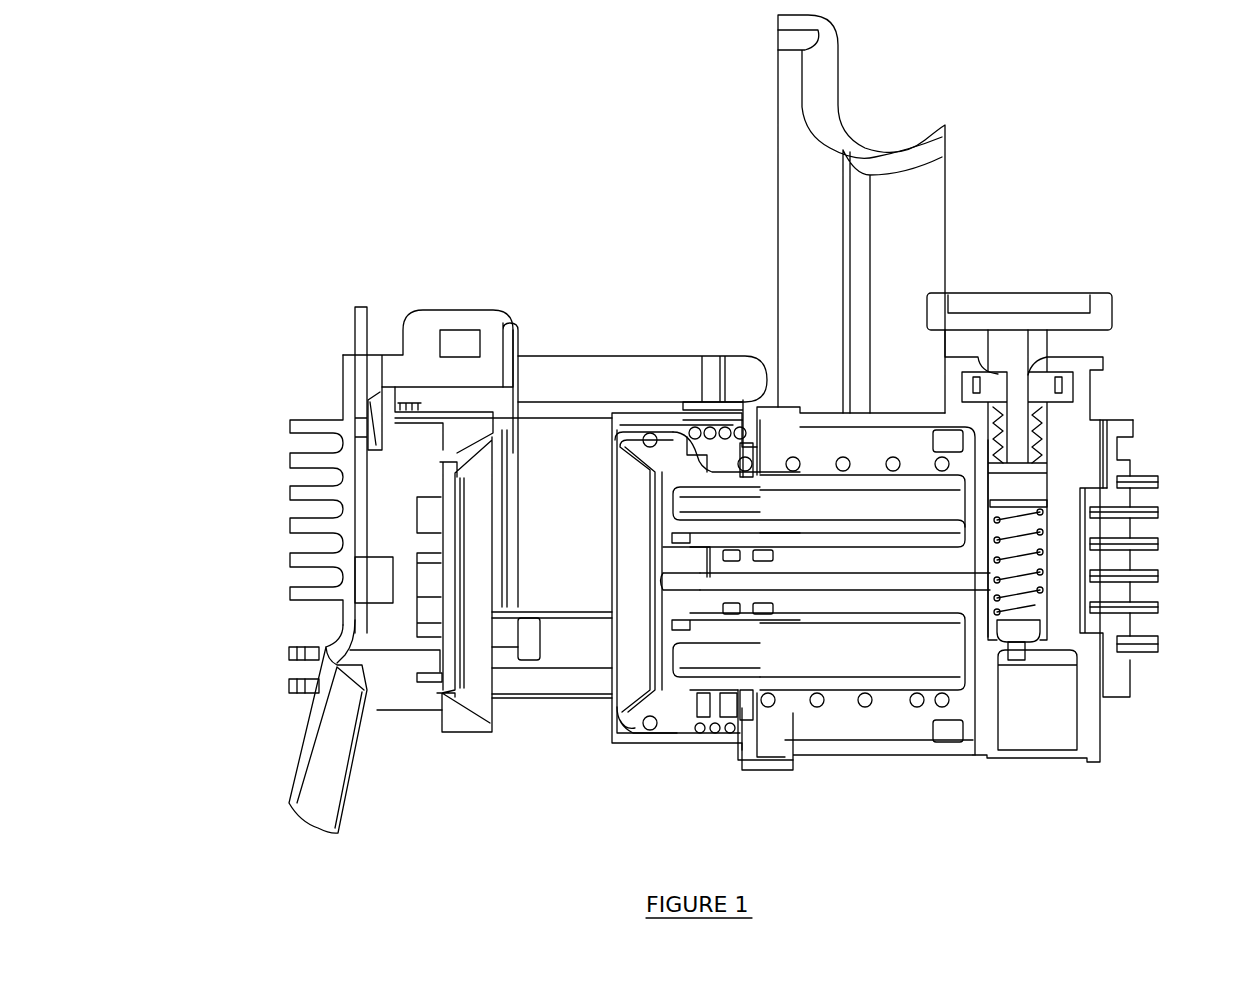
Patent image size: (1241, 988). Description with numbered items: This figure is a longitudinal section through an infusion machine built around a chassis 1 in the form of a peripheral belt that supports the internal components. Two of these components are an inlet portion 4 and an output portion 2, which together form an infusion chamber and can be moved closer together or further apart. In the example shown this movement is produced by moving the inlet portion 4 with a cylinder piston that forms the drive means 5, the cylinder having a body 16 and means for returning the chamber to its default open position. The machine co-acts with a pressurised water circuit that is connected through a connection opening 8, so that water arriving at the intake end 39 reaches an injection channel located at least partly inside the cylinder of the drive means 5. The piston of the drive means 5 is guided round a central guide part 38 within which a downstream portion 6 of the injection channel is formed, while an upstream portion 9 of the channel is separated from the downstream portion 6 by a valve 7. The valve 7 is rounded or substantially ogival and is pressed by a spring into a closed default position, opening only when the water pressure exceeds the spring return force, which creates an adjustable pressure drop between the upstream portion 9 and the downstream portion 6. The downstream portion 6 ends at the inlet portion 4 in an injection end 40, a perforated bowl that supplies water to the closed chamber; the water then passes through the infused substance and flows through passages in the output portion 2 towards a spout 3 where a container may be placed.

The chassis 1 is at (295, 493).
The output portion 2 is at (480, 673).
The spout 3 is at (321, 777).
The inlet portion 4 is at (627, 683).
The drive means 5 is at (687, 713).
The downstream portion 6 is at (762, 748).
The valve 7 is at (1048, 628).
The connection opening 8 is at (1045, 727).
The upstream portion 9 is at (1013, 653).
The body 16 is at (920, 748).
The central guide part 38 is at (880, 603).
The intake end 39 is at (1013, 655).
The injection end 40 is at (677, 582).